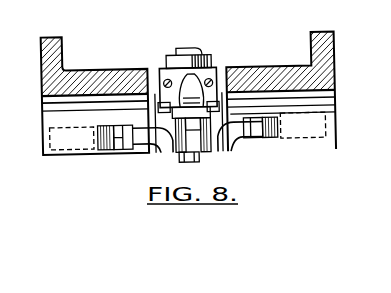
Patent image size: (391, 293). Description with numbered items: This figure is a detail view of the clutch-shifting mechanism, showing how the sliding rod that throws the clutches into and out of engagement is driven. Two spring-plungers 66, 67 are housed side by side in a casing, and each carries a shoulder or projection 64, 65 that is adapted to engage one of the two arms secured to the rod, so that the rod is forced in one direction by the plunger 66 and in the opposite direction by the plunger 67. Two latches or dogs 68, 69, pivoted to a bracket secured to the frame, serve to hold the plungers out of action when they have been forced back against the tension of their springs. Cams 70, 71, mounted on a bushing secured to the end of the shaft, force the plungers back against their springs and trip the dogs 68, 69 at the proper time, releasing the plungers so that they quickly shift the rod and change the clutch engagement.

The shoulder or projection 64 is at (119, 144).
The shoulder or projection 65 is at (249, 135).
The spring-plunger 66 is at (86, 140).
The spring-plunger 67 is at (274, 137).
The latch or dog 68 is at (165, 146).
The latch or dog 69 is at (228, 126).
The cam 70 is at (226, 125).
The cam 71 is at (180, 155).